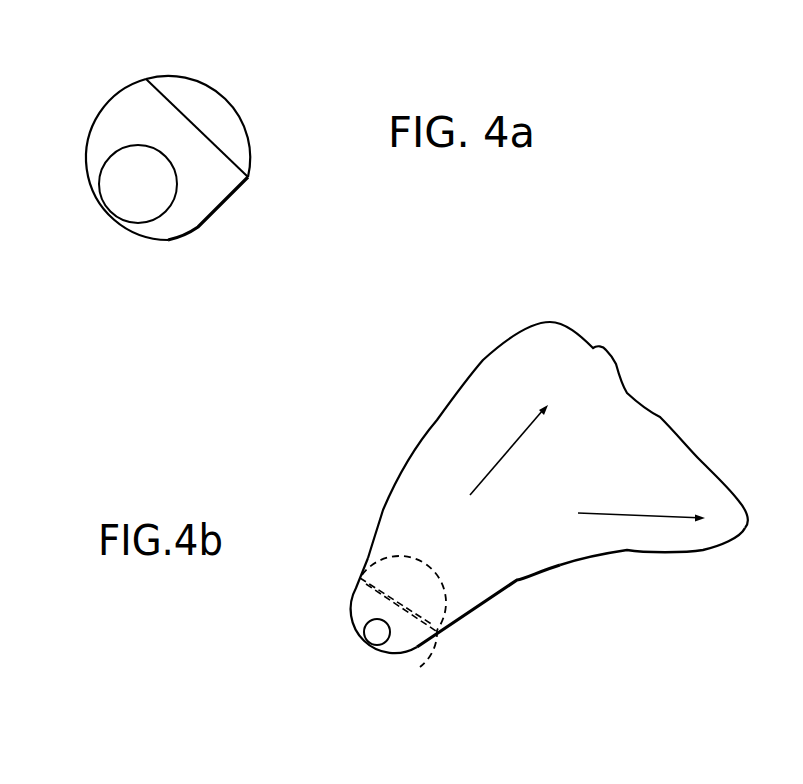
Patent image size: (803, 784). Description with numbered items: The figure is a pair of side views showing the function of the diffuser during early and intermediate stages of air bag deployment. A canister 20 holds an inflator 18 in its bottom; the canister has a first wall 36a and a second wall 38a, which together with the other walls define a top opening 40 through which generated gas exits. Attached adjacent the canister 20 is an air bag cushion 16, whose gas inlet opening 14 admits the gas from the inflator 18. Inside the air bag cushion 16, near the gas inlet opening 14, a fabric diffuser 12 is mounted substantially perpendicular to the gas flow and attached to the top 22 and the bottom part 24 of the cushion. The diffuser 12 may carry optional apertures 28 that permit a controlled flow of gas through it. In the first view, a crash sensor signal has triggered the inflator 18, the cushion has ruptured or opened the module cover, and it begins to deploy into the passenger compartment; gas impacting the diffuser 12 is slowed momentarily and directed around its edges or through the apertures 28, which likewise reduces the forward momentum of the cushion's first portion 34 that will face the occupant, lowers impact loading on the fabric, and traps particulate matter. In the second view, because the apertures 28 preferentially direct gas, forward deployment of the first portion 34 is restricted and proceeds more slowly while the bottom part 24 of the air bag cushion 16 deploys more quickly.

In FIG. 4B, the diffuser 12 is at (437, 603).
In FIG. 4B, the gas inlet opening 14 is at (423, 656).
In FIG. 4A, the air bag cushion 16 is at (216, 135).
In FIG. 4A, the inflator 18 is at (123, 185).
In FIG. 4B, the inflator 18 is at (378, 638).
In FIG. 4A, the canister 20 is at (122, 128).
In FIG. 4B, the top of the air bag cushion 22 is at (435, 415).
In FIG. 4B, the bottom part of the air bag cushion 24 is at (618, 561).
In FIG. 4B, the apertures 28 is at (425, 583).
In FIG. 4B, the first portion of the air bag cushion 34 is at (657, 417).
In FIG. 4B, the first wall of the canister 36a is at (367, 579).
In FIG. 4B, the second wall of the canister 38a is at (360, 613).
In FIG. 4A, the top opening 40 is at (170, 98).
In FIG. 4B, the top opening 40 is at (429, 633).